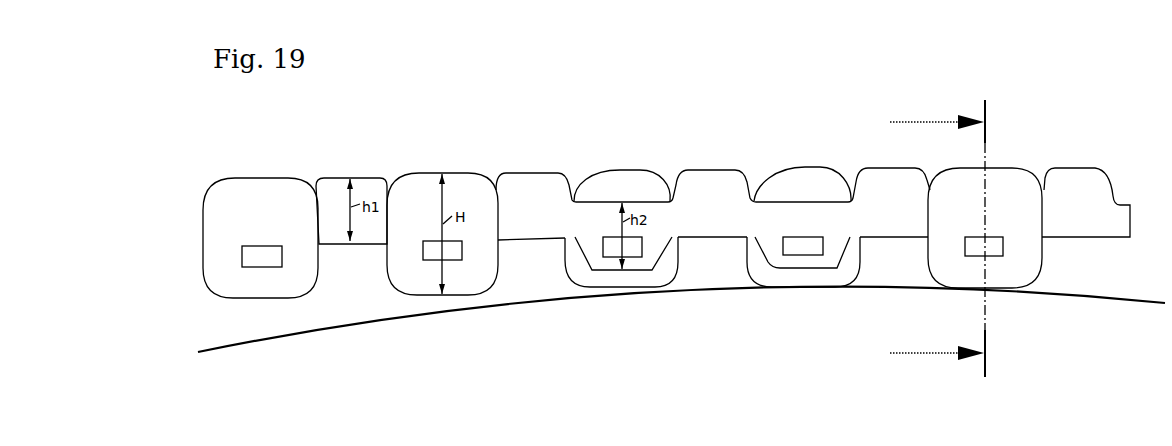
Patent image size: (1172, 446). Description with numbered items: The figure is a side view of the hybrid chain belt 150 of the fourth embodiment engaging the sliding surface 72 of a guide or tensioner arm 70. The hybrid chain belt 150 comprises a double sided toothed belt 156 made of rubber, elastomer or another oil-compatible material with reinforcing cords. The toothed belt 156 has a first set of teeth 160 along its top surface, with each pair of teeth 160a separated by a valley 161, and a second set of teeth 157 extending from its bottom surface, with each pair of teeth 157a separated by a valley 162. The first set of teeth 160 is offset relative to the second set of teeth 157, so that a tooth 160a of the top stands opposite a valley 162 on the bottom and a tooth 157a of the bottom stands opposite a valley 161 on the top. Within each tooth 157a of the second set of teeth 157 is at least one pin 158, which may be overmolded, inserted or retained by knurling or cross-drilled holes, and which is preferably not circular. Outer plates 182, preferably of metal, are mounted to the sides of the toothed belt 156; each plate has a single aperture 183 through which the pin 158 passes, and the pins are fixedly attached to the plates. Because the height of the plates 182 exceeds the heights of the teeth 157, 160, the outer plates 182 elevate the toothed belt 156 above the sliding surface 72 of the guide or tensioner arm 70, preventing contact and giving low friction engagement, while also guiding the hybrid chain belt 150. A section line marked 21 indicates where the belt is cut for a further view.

The hybrid chain belt 150 is at (392, 87).
The outer plate 182 is at (408, 289).
The tooth of first set of teeth 160a is at (511, 182).
The valley 161 is at (595, 202).
The valley 162 is at (543, 240).
The tooth of second set of teeth 157a is at (650, 260).
The second set of teeth 157 is at (843, 252).
The aperture 183 is at (762, 248).
The pin 158 is at (993, 242).
The first set of teeth 160 is at (1057, 168).
The toothed belt 156 is at (1125, 203).
The sliding surface 72 is at (1130, 297).
The guide or tensioner arm 70 is at (1083, 341).
The section line for Fig. 21 is at (920, 238).